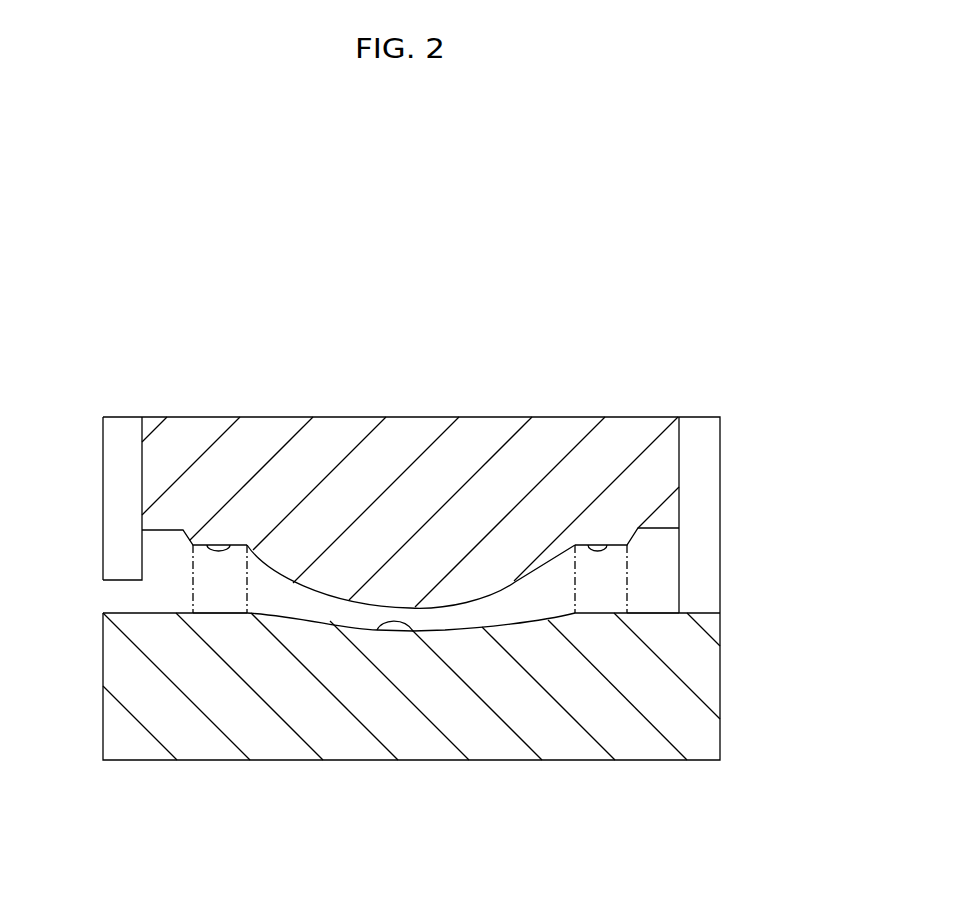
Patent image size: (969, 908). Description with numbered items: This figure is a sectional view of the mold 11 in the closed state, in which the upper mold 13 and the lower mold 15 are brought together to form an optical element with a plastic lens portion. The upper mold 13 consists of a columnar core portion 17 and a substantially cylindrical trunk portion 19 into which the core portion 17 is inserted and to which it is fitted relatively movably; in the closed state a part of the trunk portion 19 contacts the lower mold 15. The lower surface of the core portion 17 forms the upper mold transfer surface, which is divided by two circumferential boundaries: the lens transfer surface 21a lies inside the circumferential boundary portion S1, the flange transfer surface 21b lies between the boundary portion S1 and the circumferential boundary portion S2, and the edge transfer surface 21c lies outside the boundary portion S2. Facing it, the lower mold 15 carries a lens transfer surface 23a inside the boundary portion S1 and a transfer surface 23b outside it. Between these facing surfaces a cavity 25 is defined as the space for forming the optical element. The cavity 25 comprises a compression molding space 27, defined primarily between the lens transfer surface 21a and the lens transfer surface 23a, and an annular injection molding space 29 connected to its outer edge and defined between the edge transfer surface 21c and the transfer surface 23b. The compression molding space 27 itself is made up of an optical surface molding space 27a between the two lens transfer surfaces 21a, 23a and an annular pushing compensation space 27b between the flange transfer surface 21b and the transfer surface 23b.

The mold 11 is at (696, 358).
The upper mold 13 is at (735, 485).
The lower mold 15 is at (743, 690).
The core portion 17 is at (557, 430).
The trunk portion 19 is at (708, 447).
The lens transfer surface 21a is at (470, 603).
The flange transfer surface 21b is at (206, 545).
The edge transfer surface 21c is at (157, 530).
The lens transfer surface 23a is at (412, 632).
The transfer surface 23b is at (158, 613).
The cavity 25 is at (217, 606).
The compression molding space 27 is at (248, 572).
The optical surface molding space 27a is at (290, 608).
The pushing compensation space 27b is at (240, 585).
The injection molding space 29 is at (180, 595).
The circumferential boundary portion S1 is at (247, 545).
The circumferential boundary portion S2 is at (193, 546).